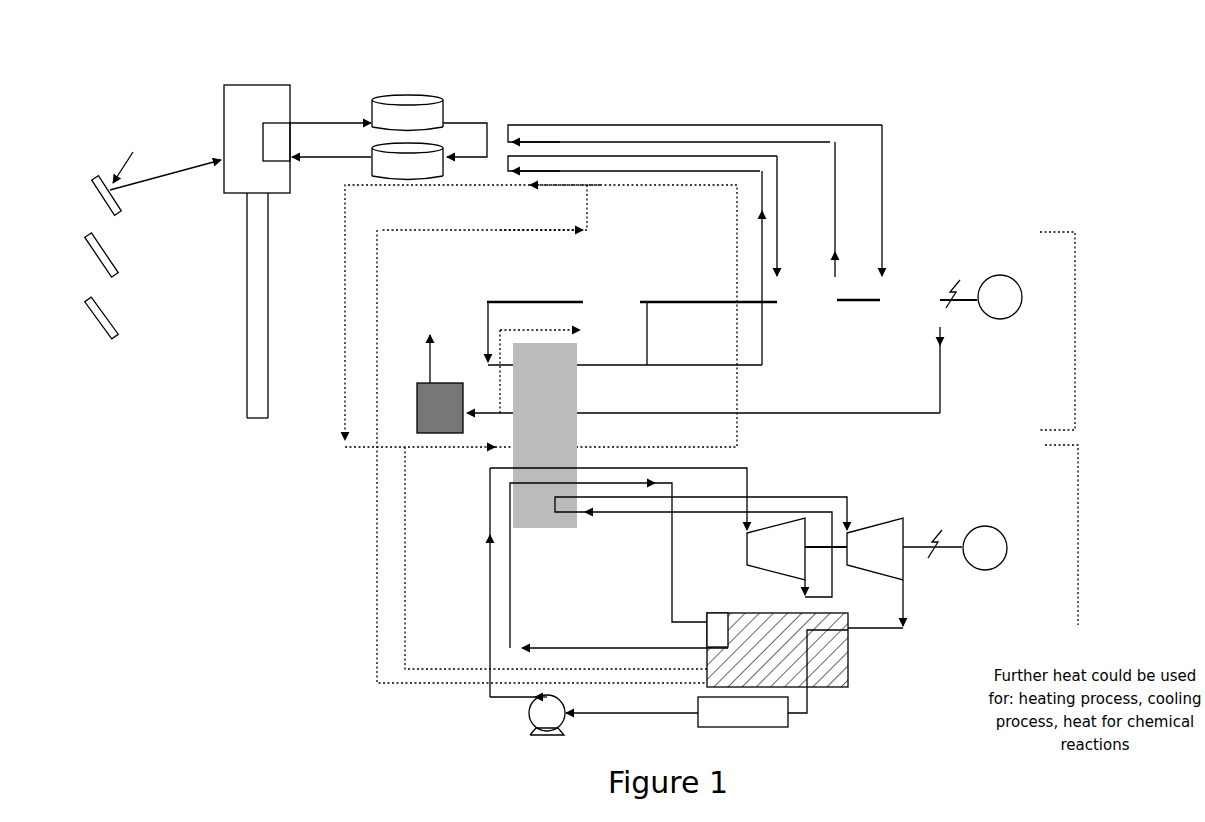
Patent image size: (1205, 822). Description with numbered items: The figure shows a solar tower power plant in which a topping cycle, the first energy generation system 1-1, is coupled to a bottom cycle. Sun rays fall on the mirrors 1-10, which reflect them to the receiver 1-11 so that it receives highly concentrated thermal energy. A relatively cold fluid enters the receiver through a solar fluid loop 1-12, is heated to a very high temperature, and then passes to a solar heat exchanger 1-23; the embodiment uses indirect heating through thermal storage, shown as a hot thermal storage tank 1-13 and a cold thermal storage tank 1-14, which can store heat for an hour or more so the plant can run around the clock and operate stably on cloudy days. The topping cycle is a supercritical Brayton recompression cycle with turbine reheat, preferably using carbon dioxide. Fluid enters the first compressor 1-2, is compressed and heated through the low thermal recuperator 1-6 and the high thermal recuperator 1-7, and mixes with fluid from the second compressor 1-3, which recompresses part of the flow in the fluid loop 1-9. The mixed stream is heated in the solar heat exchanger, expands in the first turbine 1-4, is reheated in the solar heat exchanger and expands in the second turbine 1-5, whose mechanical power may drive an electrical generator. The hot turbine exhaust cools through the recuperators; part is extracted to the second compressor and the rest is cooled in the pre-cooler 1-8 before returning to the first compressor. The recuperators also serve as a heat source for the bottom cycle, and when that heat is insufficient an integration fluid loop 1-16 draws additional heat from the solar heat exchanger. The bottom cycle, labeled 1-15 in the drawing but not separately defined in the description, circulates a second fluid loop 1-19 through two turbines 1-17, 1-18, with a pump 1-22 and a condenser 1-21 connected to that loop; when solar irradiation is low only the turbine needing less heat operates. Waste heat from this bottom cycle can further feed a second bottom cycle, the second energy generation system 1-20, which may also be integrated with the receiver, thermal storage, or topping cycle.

The first energy generation system 1-1 is at (1103, 331).
The first compressor 1-2 is at (596, 316).
The second compressor 1-3 is at (638, 327).
The first turbine 1-4 is at (828, 225).
The second turbine 1-5 is at (954, 323).
The low thermal recuperator 1-6 is at (573, 435).
The high thermal recuperator 1-7 is at (727, 390).
The pre-cooler 1-8 is at (678, 408).
The fluid loop 1-9 is at (817, 119).
The mirrors 1-10 is at (106, 160).
The receiver 1-11 is at (237, 92).
The solar fluid loop 1-12 is at (324, 119).
The hot thermal storage tank 1-13 is at (447, 107).
The cold thermal storage tank 1-14 is at (512, 312).
The bottom cycle 1-15 is at (1112, 535).
The integration fluid loop 1-16 is at (343, 405).
The turbine 1-17 is at (778, 526).
The turbine 1-18 is at (927, 559).
The second fluid loop 1-19 is at (474, 569).
The second energy generation system 1-20 is at (848, 648).
The condenser 1-21 is at (677, 724).
The pump 1-22 is at (560, 727).
The solar heat exchanger 1-23 is at (685, 93).